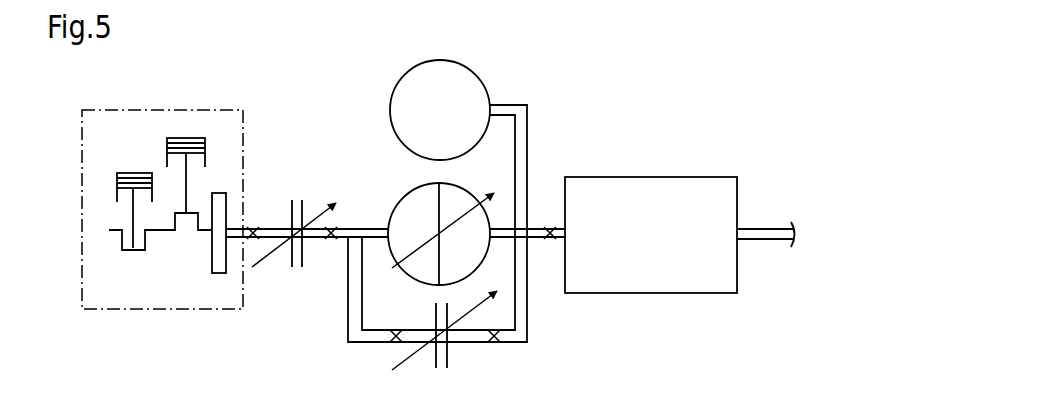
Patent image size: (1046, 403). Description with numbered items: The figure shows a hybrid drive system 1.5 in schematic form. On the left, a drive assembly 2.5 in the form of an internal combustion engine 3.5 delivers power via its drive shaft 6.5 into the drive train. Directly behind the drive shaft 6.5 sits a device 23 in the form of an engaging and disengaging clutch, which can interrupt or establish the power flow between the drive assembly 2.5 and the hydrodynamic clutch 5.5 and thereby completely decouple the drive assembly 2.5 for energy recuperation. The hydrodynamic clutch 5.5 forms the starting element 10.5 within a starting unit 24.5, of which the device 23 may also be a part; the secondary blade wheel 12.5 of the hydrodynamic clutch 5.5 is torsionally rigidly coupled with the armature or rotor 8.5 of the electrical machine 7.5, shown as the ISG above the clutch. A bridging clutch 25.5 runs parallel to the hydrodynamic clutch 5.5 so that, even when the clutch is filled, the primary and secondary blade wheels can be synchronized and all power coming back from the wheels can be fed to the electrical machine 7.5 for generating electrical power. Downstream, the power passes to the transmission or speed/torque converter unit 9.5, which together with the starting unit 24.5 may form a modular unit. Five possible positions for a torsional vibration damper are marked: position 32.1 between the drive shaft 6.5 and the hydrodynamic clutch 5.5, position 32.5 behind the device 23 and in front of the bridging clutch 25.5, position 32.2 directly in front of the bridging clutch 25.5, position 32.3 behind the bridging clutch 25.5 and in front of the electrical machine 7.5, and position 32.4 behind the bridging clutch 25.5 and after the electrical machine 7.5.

The drive system 1.5 is at (417, 52).
The drive assembly 2.5 is at (162, 170).
The internal combustion engine 3.5 is at (168, 117).
The hydrodynamic clutch 5.5 is at (379, 181).
The drive shaft 6.5 is at (252, 228).
The electrical machine 7.5 is at (469, 191).
The armature, rotor of the electrical machine 8.5 is at (473, 93).
The speed/torque converter unit 9.5 is at (665, 242).
The starting element 10.5 is at (397, 187).
The secondary blade wheel 12.5 is at (473, 258).
The device for the alternative interruption or realization of the power flow between 23 is at (292, 276).
The starting unit 24.5 is at (380, 149).
The bridging clutch 25.5 is at (460, 356).
The torsional vibration damper 32.1 is at (256, 242).
The torsional vibration damper 32.2 is at (396, 338).
The torsional vibration damper 32.3 is at (500, 333).
The torsional vibration damper 32.4 is at (550, 228).
The torsional vibration damper 32.5 is at (331, 242).